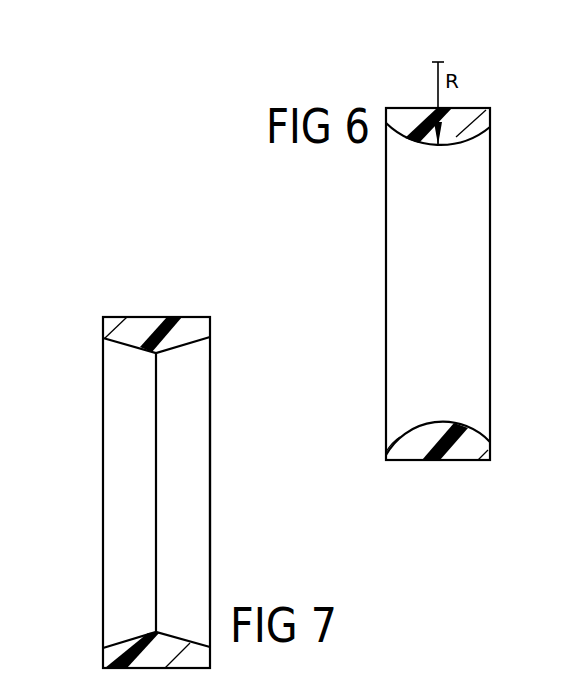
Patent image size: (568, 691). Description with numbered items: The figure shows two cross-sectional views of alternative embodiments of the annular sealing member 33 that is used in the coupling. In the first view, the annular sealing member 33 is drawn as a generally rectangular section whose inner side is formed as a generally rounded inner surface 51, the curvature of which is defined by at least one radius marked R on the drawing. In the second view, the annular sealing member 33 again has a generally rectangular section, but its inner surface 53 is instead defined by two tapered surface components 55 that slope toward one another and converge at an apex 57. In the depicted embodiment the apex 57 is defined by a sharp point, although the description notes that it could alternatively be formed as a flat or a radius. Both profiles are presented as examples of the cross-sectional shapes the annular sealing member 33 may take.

In FIG. 6, the annular sealing member 33 is at (418, 98).
In FIG. 7, the annular sealing member 33 is at (145, 307).
In FIG. 6, the rounded inner surface 51 is at (443, 144).
In FIG. 7, the inner surface 53 is at (198, 511).
In FIG. 7, the tapered surface components 55 is at (178, 348).
In FIG. 7, the apex 57 is at (155, 423).